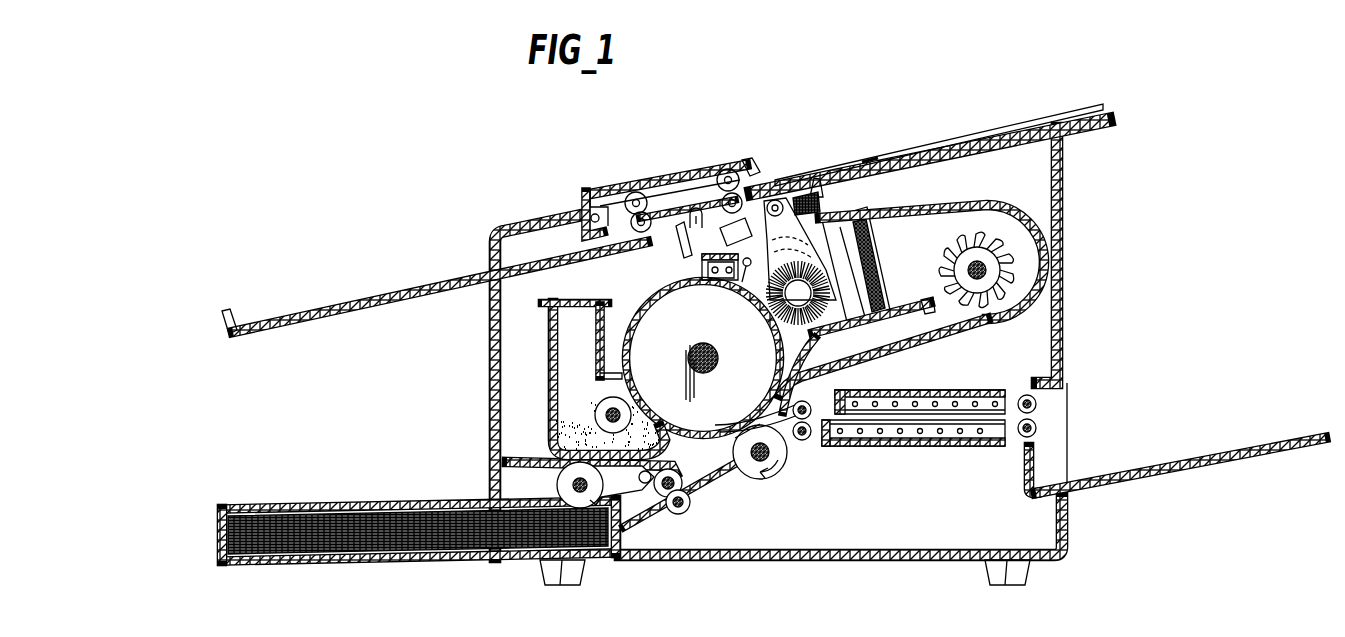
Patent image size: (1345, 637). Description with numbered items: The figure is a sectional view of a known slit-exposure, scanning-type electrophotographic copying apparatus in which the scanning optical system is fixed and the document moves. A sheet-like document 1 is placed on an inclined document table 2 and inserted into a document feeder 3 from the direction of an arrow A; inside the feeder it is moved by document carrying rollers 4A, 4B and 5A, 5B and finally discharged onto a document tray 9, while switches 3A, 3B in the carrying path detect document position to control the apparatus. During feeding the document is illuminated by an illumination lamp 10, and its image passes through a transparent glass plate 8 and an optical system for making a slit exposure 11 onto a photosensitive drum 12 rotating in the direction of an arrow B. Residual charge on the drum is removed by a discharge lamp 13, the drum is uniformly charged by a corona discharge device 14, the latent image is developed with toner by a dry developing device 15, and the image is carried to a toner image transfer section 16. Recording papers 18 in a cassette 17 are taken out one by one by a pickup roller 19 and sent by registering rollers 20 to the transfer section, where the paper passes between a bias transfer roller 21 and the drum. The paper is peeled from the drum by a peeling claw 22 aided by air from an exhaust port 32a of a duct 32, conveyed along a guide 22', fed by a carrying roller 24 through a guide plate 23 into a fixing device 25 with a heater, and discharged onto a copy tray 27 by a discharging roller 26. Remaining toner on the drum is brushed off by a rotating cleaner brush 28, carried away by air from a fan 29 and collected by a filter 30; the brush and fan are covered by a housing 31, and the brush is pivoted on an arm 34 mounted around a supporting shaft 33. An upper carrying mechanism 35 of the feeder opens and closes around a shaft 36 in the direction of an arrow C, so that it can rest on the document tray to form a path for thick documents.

The document 1 is at (947, 141).
The document table 2 is at (1003, 143).
The document feeder 3 is at (685, 154).
The switch 3A is at (812, 182).
The switch 3B is at (842, 208).
The document carrying roller 4A is at (742, 170).
The document carrying roller 4B is at (725, 174).
The document carrying roller 5A is at (631, 228).
The document carrying roller 5B is at (627, 197).
The transparent glass plate 8 is at (688, 226).
The document tray 9 is at (386, 299).
The illumination lamp 10 is at (677, 239).
The optical system for making a slit exposure 11 is at (700, 258).
The photosensitive drum 12 is at (622, 322).
The discharge lamp 13 is at (745, 294).
The corona discharge device 14 is at (707, 282).
The dry developing device 15 is at (549, 378).
The toner image transfer section 16 is at (742, 466).
The cassette 17 is at (345, 504).
The recording paper 18 is at (420, 518).
The pickup roller 19 is at (557, 487).
The registering rollers 20 is at (690, 504).
The bias transfer roller 21 is at (787, 466).
The peeling claw 22 is at (750, 393).
The guide 22' is at (769, 402).
The guide plate 23 is at (760, 422).
The carrying roller 24 is at (812, 436).
The fixing device 25 is at (980, 389).
The discharging roller 26 is at (1037, 428).
The copy tray 27 is at (1145, 470).
The cleaner brush 28 is at (815, 334).
The fan 29 is at (950, 258).
The filter 30 is at (908, 273).
The housing 31 is at (938, 210).
The duct 32 is at (913, 338).
The exhaust port 32a is at (790, 385).
The supporting shaft 33 is at (773, 200).
The arm 34 is at (806, 198).
The upper carrying mechanism 35 is at (580, 198).
The shaft 36 is at (590, 221).
The arrow A is at (890, 153).
The arrow B is at (666, 358).
The arrow C is at (655, 172).